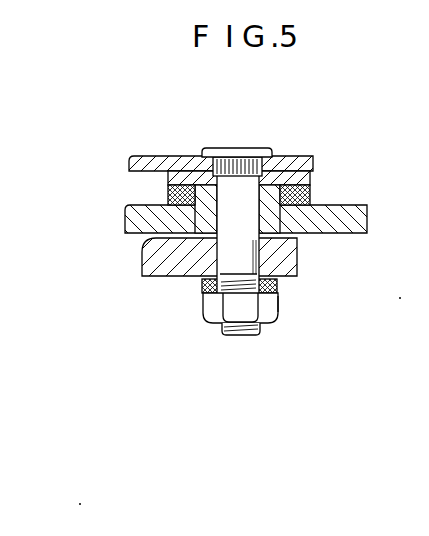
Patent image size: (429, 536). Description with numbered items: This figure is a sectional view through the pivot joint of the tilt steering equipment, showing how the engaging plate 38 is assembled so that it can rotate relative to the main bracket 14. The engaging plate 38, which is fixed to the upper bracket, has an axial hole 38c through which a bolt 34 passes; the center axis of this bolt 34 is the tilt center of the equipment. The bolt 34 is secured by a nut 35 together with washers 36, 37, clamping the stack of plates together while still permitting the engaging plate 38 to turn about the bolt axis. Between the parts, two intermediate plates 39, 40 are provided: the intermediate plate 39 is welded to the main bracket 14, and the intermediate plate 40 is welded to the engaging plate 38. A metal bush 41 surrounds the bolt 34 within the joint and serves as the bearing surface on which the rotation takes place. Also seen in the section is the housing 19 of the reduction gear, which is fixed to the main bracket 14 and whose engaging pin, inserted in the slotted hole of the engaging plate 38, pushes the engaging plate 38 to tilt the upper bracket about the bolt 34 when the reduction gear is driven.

The main bracket 14 is at (290, 152).
The housing 19 is at (152, 263).
The bolt 34 is at (248, 252).
The nut 35 is at (277, 303).
The washer 36 is at (203, 285).
The washer 37 is at (203, 292).
The engaging plate 38 is at (337, 236).
The axial hole 38c is at (166, 190).
The intermediate plate 39 is at (312, 178).
The intermediate plate 40 is at (313, 192).
The metal bush 41 is at (316, 199).